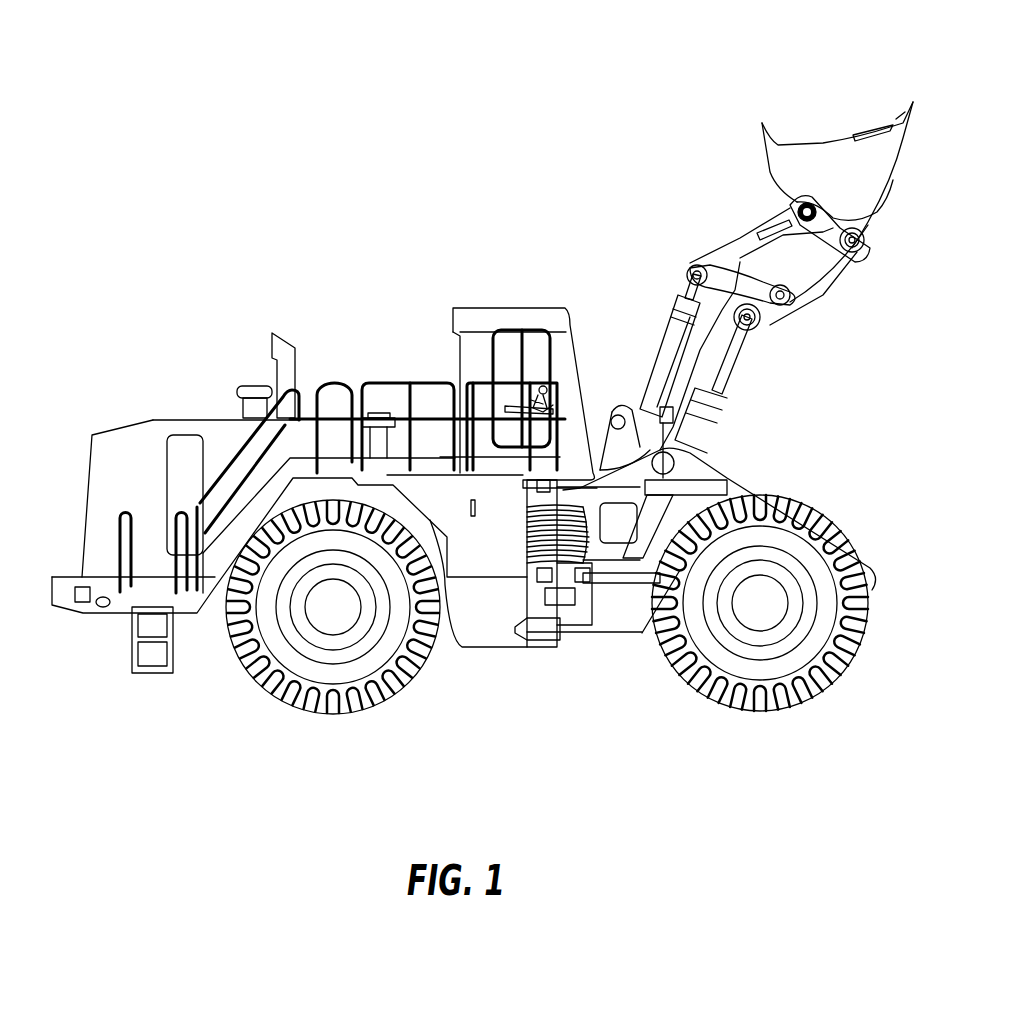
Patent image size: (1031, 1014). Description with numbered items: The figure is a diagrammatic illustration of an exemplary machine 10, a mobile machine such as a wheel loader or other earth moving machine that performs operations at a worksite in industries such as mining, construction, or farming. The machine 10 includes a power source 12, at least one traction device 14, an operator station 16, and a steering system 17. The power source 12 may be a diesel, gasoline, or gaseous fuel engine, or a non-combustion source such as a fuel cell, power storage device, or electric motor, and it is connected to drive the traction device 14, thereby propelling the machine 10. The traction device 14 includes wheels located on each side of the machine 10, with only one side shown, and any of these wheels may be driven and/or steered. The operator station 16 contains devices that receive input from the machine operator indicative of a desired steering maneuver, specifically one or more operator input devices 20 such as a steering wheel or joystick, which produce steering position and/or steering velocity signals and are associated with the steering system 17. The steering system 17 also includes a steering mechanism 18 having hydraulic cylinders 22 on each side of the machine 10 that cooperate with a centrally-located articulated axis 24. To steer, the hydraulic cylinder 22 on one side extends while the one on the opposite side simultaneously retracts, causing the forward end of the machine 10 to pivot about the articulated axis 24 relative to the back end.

The machine 10 is at (983, 96).
The power source 12 is at (142, 486).
The traction device 14 is at (870, 632).
The operator station 16 is at (545, 320).
The steering system 17 is at (468, 261).
The steering mechanism 18 is at (596, 708).
The operator input device 20 is at (557, 378).
The hydraulic cylinder 22 is at (615, 585).
The articulated axis 24 is at (551, 642).